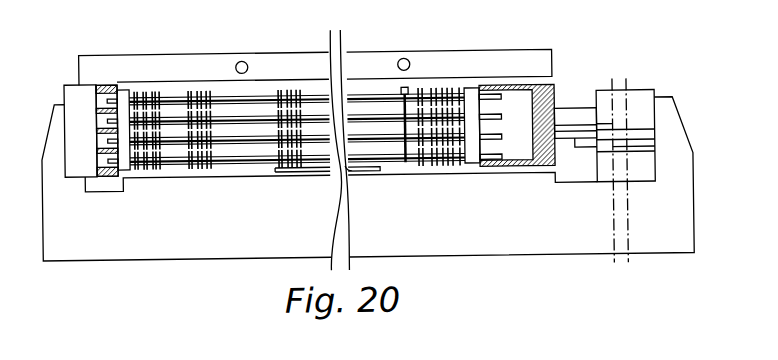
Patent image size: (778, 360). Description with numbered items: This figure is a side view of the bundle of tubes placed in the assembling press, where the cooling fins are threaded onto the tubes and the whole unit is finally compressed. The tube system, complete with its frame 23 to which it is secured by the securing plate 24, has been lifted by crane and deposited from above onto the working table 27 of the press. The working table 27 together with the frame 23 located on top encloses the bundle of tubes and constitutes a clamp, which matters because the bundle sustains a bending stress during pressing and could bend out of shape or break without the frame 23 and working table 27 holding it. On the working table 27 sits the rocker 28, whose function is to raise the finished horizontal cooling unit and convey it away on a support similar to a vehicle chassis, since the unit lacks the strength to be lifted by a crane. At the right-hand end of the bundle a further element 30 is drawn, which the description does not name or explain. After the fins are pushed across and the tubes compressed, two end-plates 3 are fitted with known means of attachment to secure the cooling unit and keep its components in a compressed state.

The end-plate 3 is at (124, 97).
The frame 23 is at (225, 52).
The securing plate 24 is at (404, 123).
The working table 27 is at (570, 208).
The rocker 28 is at (332, 139).
The end housing block 30 is at (530, 109).